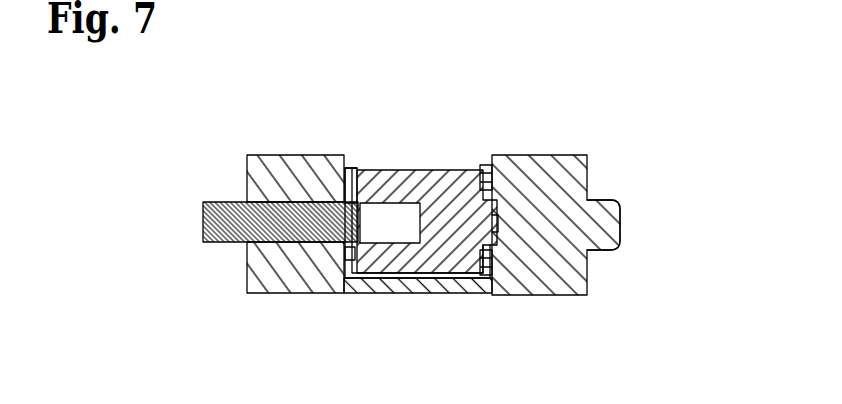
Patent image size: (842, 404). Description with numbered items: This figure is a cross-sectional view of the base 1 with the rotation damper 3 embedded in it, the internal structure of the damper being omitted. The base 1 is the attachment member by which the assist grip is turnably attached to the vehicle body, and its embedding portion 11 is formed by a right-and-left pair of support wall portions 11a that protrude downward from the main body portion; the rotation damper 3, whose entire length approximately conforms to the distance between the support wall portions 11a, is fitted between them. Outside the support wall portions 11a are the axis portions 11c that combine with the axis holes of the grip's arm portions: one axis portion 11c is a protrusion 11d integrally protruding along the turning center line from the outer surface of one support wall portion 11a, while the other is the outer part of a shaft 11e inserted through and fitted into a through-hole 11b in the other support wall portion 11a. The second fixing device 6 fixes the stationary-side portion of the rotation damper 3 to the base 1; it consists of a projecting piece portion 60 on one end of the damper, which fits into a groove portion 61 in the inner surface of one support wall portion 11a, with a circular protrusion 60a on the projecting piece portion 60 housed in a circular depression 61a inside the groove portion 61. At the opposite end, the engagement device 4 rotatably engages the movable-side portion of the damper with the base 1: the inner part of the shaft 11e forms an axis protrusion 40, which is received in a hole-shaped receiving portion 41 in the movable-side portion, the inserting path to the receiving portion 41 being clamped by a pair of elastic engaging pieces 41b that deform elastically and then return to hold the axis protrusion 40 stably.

The base 1 is at (448, 266).
The rotation damper 3 is at (436, 170).
The engagement device 4 is at (417, 163).
The axis protrusion 40 is at (372, 170).
The receiving portion 41 is at (357, 172).
The elastic engaging pieces 41b is at (352, 279).
The second fixing device 6 is at (531, 238).
The groove portion 61 is at (543, 157).
The circular depression 61a is at (498, 228).
The projecting piece portion 60 is at (512, 322).
The circular protrusion 60a is at (468, 280).
The embedding portion 11 is at (410, 294).
The support wall portions 11a is at (545, 280).
The through-hole 11b is at (280, 293).
The axis portions 11c is at (421, 221).
The protrusion 11d is at (615, 210).
The shaft 11e is at (207, 243).